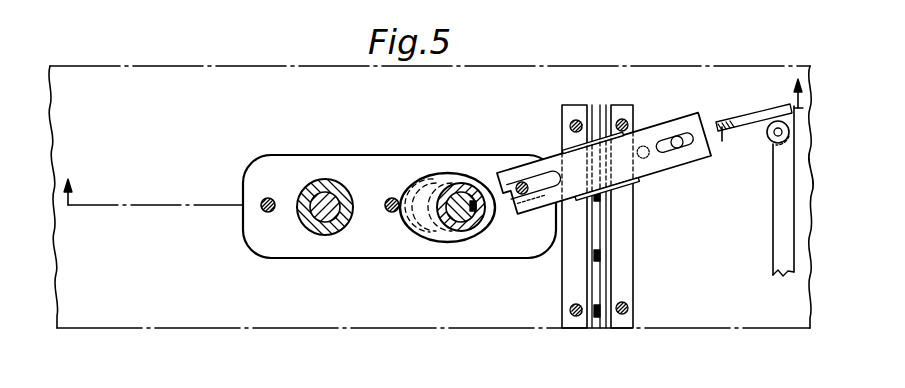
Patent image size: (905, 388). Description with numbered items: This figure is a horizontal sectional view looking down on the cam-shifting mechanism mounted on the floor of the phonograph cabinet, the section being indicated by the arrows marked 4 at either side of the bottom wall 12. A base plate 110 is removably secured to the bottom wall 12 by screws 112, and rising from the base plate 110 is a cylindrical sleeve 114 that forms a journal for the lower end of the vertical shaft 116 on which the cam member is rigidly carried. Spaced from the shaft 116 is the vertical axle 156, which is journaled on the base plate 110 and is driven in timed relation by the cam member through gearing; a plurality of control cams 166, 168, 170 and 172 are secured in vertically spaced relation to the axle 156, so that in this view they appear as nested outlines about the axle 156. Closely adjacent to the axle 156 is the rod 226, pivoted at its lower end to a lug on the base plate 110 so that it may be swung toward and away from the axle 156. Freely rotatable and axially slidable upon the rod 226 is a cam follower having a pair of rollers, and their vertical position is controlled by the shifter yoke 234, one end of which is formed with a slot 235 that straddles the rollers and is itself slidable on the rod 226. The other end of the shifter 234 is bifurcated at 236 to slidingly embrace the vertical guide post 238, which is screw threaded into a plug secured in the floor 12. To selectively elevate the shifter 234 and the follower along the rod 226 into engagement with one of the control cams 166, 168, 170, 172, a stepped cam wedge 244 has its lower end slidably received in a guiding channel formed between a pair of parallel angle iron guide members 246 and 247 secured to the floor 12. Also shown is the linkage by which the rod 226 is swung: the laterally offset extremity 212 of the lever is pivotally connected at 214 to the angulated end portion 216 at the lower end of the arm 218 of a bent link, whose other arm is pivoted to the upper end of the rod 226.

The section line 4- 4 is at (438, 158).
The bottom wall 12 is at (107, 312).
The base plate 110 is at (371, 160).
The screws 112 is at (268, 198).
The cylindrical sleeve 114 is at (312, 186).
The vertical shaft 116 is at (325, 216).
The vertical axle 156 is at (461, 187).
The control cam 166 is at (408, 210).
The control cam 168 is at (427, 226).
The control cam 170 is at (436, 232).
The control cam 172 is at (440, 192).
The laterally offset extremity 212 is at (754, 126).
The pivot 214 is at (775, 143).
The angulated end portion 216 is at (783, 237).
The arm 218 is at (735, 147).
The rod 226 is at (518, 181).
The shifter yoke 234 is at (623, 148).
The slot 235 is at (539, 178).
The bifurcated end 236 is at (696, 131).
The vertical guide post 238 is at (679, 148).
The stepped cam wedge 244 is at (598, 237).
The angle iron guide member 246 is at (575, 285).
The angle iron guide member 247 is at (620, 282).